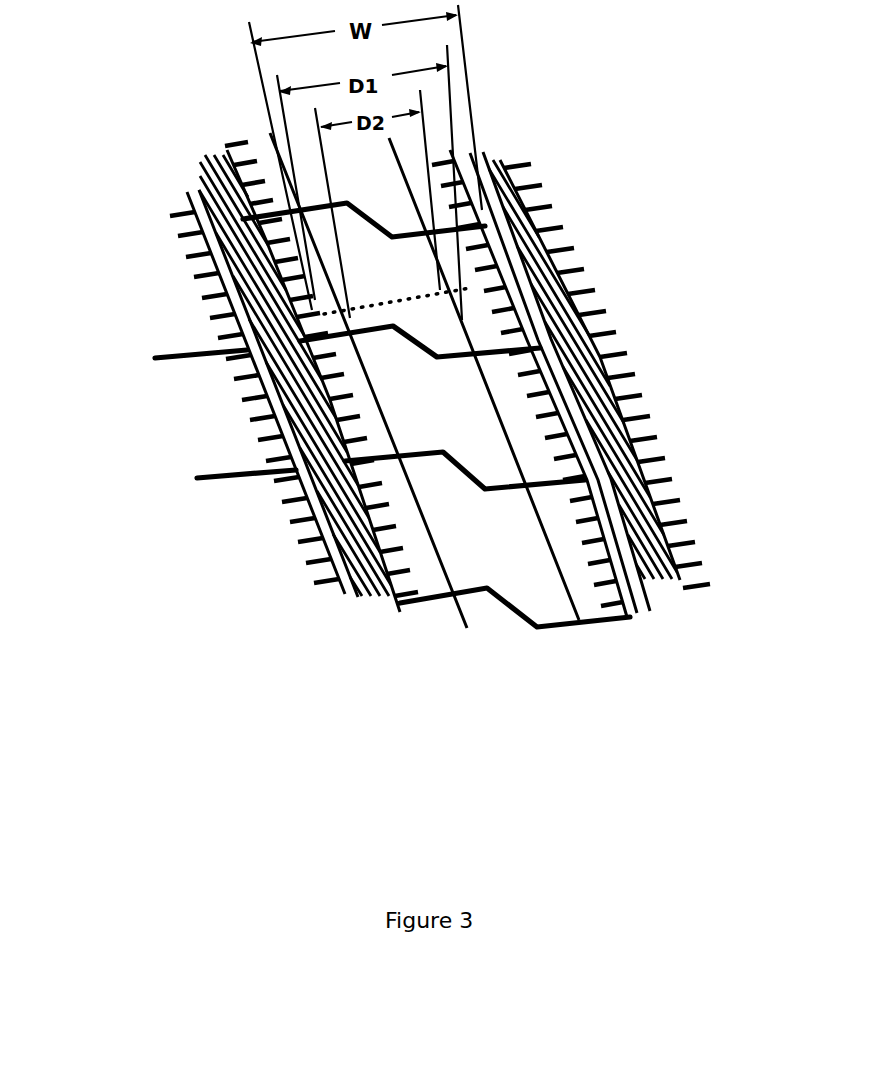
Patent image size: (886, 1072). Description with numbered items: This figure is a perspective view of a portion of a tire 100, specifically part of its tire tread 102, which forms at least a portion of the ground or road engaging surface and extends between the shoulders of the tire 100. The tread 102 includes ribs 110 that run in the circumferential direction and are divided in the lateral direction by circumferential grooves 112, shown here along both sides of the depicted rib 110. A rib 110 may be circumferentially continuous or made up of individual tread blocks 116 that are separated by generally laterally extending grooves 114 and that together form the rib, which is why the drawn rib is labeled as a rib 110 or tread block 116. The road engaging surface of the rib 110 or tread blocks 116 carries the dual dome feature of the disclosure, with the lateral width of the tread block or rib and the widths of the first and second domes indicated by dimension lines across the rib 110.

The tire 100 is at (667, 231).
The tire tread 102 is at (594, 219).
The rib 110 is at (240, 545).
The circumferential groove 112 is at (352, 600).
The lateral groove 114 is at (557, 472).
The tread block 116 is at (456, 460).